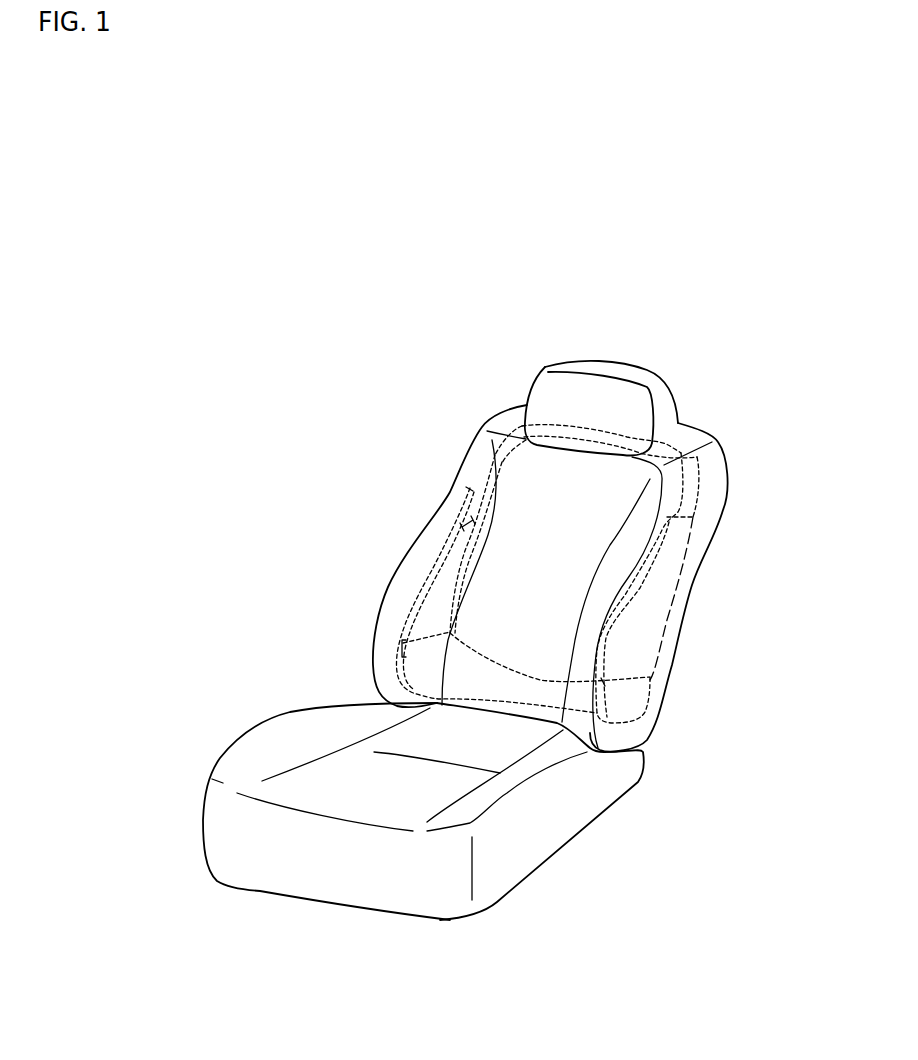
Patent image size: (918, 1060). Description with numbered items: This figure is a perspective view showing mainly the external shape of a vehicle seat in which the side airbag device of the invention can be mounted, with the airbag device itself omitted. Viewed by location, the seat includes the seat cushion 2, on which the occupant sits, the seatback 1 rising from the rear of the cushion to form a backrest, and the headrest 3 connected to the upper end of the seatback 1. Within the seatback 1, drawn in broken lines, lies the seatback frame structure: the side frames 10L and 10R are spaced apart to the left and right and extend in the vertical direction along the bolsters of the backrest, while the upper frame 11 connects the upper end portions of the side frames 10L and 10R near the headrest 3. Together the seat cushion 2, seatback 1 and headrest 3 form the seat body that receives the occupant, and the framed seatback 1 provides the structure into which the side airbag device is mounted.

The seatback 1 is at (725, 462).
The seat cushion 2 is at (283, 712).
The headrest 3 is at (625, 363).
The side frame 10R is at (435, 592).
The side frame 10L is at (683, 527).
The upper frame 11 is at (673, 444).